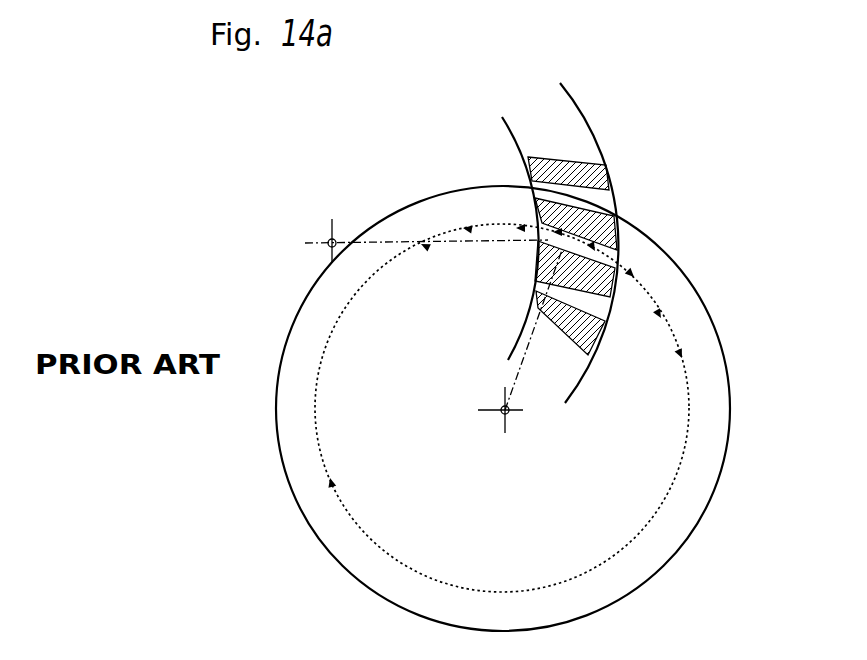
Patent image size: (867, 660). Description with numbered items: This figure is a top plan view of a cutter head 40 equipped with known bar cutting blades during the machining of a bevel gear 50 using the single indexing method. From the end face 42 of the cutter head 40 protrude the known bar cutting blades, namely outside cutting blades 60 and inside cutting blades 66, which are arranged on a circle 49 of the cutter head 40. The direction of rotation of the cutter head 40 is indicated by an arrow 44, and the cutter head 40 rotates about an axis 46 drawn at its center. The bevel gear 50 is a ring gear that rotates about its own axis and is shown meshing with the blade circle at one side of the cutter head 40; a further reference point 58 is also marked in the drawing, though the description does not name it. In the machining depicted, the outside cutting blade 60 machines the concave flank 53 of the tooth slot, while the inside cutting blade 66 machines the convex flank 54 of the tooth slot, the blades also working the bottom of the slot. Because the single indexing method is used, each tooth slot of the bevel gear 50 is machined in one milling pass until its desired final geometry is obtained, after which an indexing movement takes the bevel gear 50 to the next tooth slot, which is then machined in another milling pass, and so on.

The cutter head 40 is at (540, 408).
The end face 42 is at (715, 413).
The arrow 44 is at (328, 480).
The axis 46 is at (500, 415).
The circle 49 is at (683, 462).
The bevel gear 50 is at (570, 240).
The concave flank 53 is at (612, 222).
The convex flank 54 is at (614, 268).
The reference point 58 is at (327, 238).
The outside cutting blades 60 is at (461, 226).
The inside cutting blades 66 is at (418, 240).